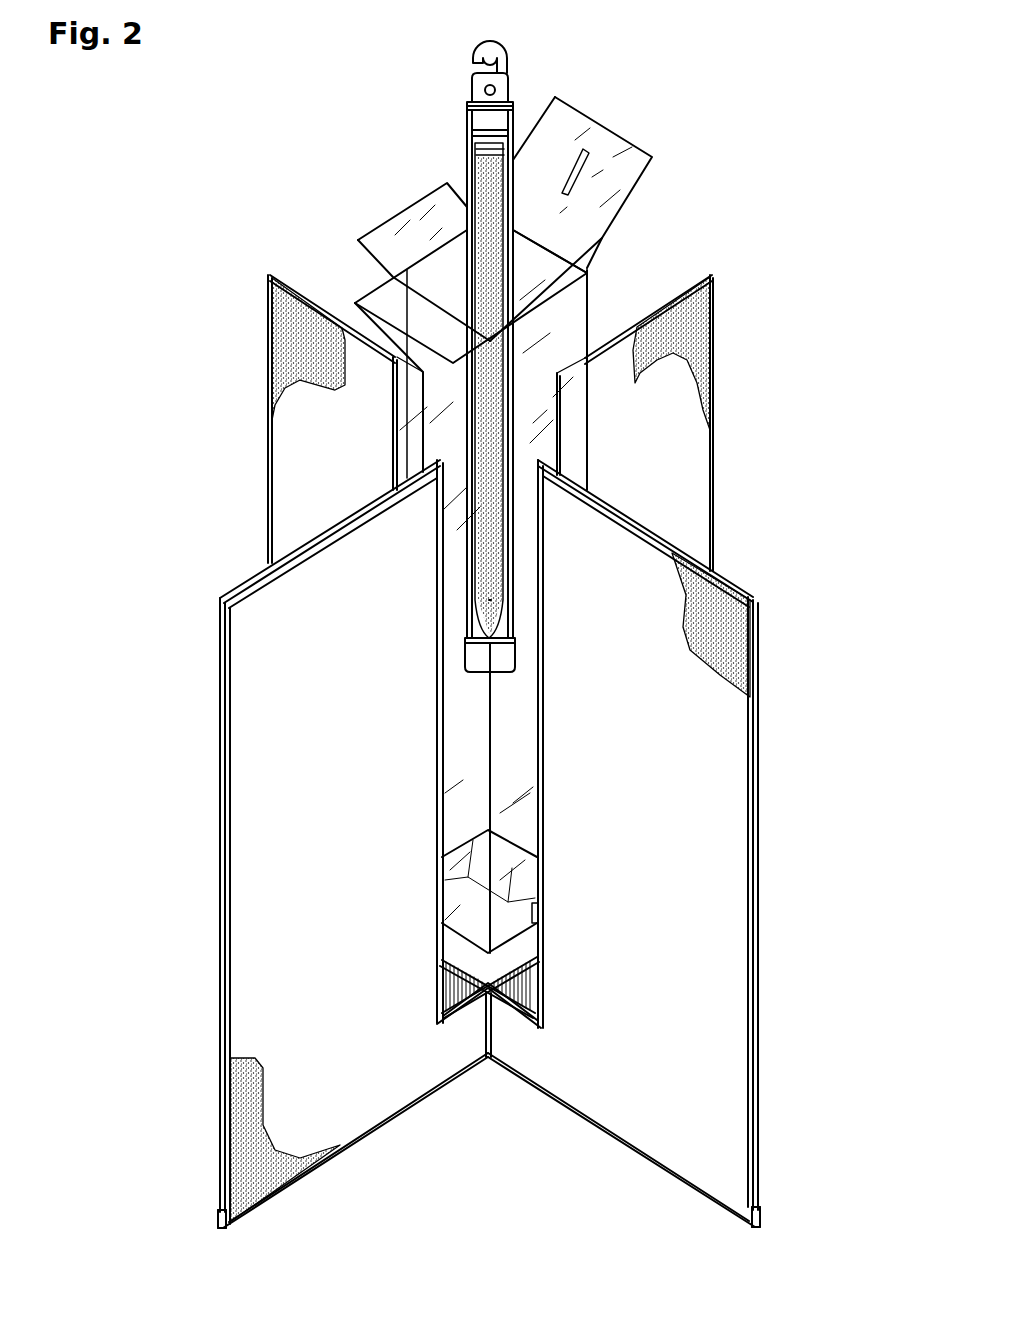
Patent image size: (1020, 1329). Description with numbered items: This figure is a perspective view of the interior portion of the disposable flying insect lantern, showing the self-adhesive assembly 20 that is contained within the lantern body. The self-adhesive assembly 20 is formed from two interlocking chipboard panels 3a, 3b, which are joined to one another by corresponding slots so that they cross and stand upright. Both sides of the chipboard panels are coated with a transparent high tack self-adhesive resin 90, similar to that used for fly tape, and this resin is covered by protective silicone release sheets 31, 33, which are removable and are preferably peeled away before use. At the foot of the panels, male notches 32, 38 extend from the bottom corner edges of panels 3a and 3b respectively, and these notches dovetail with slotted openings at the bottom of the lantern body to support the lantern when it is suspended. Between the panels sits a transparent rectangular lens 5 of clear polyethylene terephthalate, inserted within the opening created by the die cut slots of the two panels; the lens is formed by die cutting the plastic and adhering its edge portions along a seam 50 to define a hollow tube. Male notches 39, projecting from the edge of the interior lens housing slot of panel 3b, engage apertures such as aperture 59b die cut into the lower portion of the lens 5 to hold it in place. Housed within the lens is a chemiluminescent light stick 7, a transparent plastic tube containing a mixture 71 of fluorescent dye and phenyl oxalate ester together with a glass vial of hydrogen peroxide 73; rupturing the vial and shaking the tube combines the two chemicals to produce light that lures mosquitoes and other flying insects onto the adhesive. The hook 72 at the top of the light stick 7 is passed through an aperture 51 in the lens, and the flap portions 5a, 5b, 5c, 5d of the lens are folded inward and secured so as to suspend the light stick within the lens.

The self-adhesive assembly 20 is at (716, 83).
The interlocking panel 3a is at (222, 720).
The interlocking panel 3b is at (756, 850).
The protective silicone release sheet 31 is at (618, 440).
The male notch 32 is at (223, 1228).
The protective silicone release sheet 33 is at (322, 483).
The male notch 38 is at (757, 1228).
The male notch 39 is at (532, 990).
The transparent lens 5 is at (581, 455).
The flap portion 5a is at (573, 130).
The flap portion 5b is at (586, 271).
The flap portion 5c is at (385, 293).
The flap portion 5d is at (422, 227).
The seam 50 is at (403, 433).
The aperture 51 is at (580, 170).
The aperture 59b is at (539, 923).
The light stick 7 is at (468, 172).
The mixture 71 is at (487, 132).
The hook 72 is at (508, 50).
The hydrogen peroxide 73 is at (497, 593).
The self-adhesive resin 90 is at (290, 318).